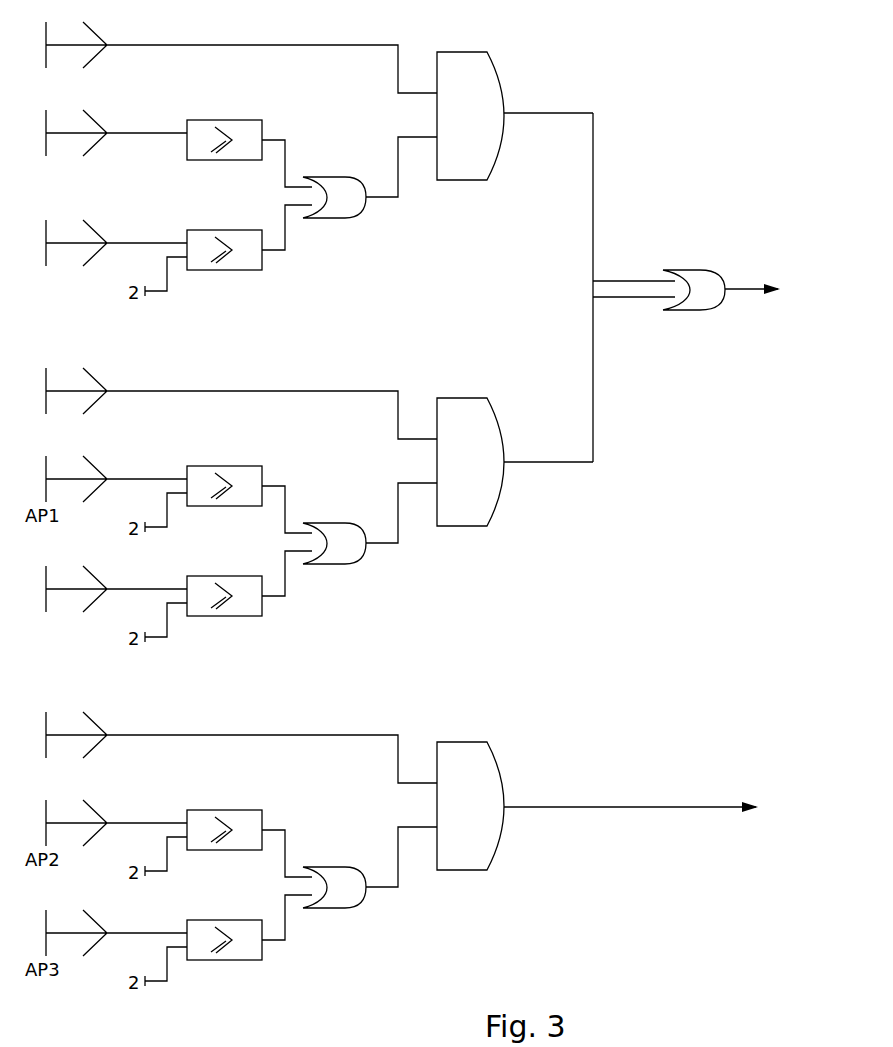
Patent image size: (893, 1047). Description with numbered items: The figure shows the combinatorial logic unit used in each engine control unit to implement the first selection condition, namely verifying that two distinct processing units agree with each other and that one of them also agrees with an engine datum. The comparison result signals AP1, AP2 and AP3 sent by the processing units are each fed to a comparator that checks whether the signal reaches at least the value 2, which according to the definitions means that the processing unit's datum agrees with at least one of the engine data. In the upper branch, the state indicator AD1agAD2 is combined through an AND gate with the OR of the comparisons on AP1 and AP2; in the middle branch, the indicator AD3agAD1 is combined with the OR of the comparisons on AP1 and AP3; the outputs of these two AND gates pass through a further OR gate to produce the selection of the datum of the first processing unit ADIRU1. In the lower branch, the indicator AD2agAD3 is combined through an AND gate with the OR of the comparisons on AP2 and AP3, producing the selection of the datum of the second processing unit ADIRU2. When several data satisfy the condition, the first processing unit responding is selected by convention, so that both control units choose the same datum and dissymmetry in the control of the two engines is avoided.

The comparison threshold value 2 is at (187, 147).
The comparison result signal of first processing unit AP1 is at (106, 145).
The comparison result signal of second processing unit AP2 is at (106, 255).
The comparison result signal of third processing unit AP3 is at (106, 601).
The state indicator of agreement between first and second processing units AD1agAD2 is at (229, 57).
The state indicator of agreement between third and first processing units AD3agAD1 is at (229, 403).
The state indicator of agreement between second and third processing units AD2agAD3 is at (229, 747).
The first processing unit ADIRU1 is at (748, 290).
The second processing unit ADIRU2 is at (658, 808).